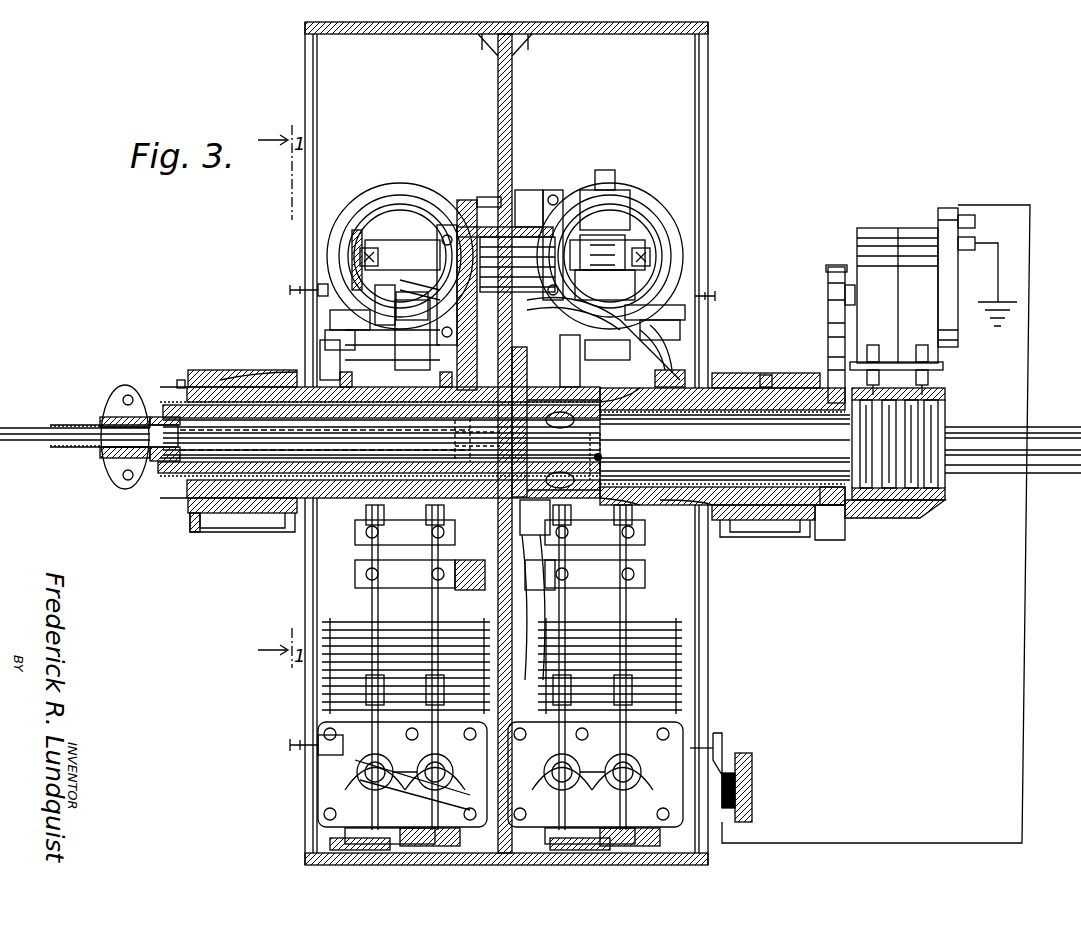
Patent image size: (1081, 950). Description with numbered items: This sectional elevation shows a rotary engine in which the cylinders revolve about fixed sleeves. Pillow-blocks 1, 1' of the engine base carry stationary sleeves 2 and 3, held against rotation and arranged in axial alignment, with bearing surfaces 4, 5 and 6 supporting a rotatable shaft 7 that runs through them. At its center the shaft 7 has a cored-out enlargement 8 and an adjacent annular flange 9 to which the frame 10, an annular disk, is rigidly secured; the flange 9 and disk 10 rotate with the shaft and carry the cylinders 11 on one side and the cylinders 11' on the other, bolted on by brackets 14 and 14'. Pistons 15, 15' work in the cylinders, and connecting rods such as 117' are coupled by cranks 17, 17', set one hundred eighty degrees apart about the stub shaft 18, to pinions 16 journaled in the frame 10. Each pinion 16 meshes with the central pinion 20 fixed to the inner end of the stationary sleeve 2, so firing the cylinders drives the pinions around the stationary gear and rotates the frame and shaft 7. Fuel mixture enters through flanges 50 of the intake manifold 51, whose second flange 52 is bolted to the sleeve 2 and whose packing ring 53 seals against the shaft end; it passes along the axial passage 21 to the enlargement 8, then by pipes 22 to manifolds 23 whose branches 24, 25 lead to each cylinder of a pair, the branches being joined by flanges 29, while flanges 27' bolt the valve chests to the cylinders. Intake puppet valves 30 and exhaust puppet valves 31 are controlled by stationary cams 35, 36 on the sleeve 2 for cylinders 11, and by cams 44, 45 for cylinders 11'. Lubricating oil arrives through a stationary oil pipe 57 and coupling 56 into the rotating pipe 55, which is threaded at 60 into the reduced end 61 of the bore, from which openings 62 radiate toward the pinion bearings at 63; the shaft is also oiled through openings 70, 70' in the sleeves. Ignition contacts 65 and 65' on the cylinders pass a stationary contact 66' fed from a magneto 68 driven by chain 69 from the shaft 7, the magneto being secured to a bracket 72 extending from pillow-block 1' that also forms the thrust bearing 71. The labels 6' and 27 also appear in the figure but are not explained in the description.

The pillow-block 1 is at (516, 425).
The pillow-block 1' is at (767, 546).
The stationary sleeve 2 is at (235, 360).
The stationary sleeve 3 is at (752, 510).
The bearing surface 4 is at (200, 520).
The bearing surface 5 is at (470, 458).
The bearing surface 6 is at (830, 534).
The conductor wire 6' is at (899, 524).
The rotatable shaft 7 is at (118, 528).
The cored-out enlargement 8 is at (700, 540).
The annular flange 9 is at (535, 590).
The frame 10 is at (515, 108).
The cylinders 11 is at (374, 414).
The cylinders 11' is at (646, 430).
The brackets 14 is at (445, 365).
The brackets 14' is at (563, 367).
The pistons 15 is at (381, 213).
The pistons 15' is at (668, 236).
The pinions 16 is at (462, 196).
The crank 17 is at (336, 300).
The crank 17' is at (631, 159).
The connecting rod 117' is at (642, 225).
The stub shaft 18 is at (555, 190).
The central pinion 20 is at (448, 330).
The axial passage 21 is at (210, 465).
The pipes 22 is at (690, 618).
The manifolds 23 is at (690, 718).
The branch 24 is at (586, 839).
The branch 25 is at (438, 839).
The contact disk 27 is at (331, 777).
The flanges 27' is at (680, 790).
The flanges 29 is at (330, 815).
The intake puppet valves 30 is at (320, 738).
The exhaust puppet valves 31 is at (380, 772).
The outer cam 35 is at (320, 540).
The inner cam 36 is at (320, 578).
The cam 44 is at (692, 380).
The cam 45 is at (695, 392).
The flanges 50 is at (122, 400).
The intake manifold 51 is at (150, 448).
The second flange 52 is at (183, 378).
The expansion packing ring 53 is at (150, 384).
The oil pipe 55 is at (250, 450).
The coupling 56 is at (112, 475).
The stationary oil pipe 57 is at (40, 430).
The threaded portion 60 is at (612, 454).
The reduced end 61 is at (556, 422).
The openings 62 is at (620, 463).
The pinion bearings 63 is at (578, 300).
The contacts 65 is at (258, 511).
The projecting contact 65' is at (739, 511).
The stationary contact 66' is at (774, 765).
The magneto 68 is at (880, 228).
The chain 69 is at (835, 266).
The oil opening 70 is at (388, 358).
The oil opening 70' is at (766, 365).
The thrust bearing 71 is at (900, 498).
The bracket 72 is at (870, 508).